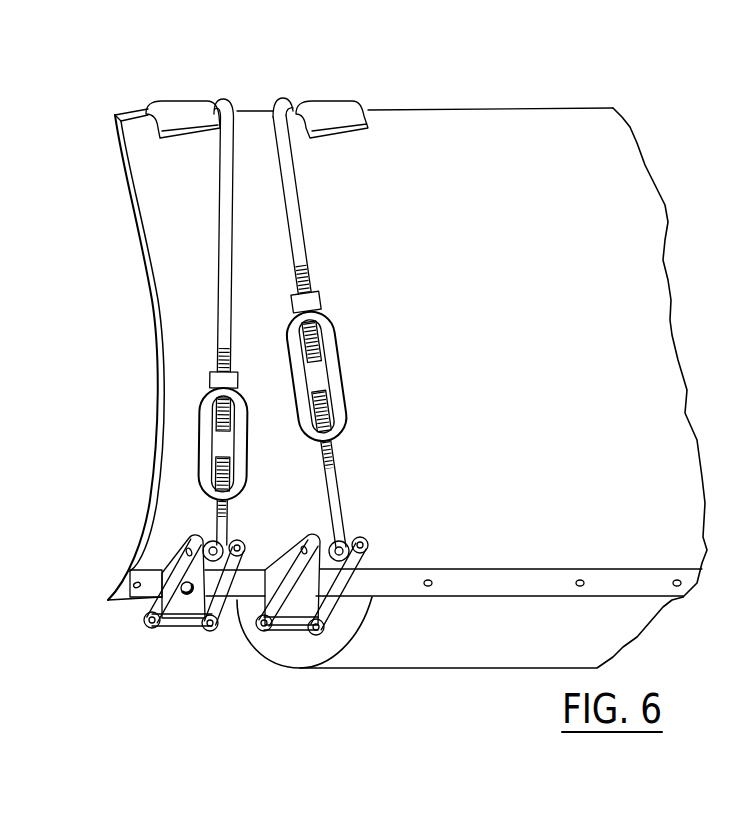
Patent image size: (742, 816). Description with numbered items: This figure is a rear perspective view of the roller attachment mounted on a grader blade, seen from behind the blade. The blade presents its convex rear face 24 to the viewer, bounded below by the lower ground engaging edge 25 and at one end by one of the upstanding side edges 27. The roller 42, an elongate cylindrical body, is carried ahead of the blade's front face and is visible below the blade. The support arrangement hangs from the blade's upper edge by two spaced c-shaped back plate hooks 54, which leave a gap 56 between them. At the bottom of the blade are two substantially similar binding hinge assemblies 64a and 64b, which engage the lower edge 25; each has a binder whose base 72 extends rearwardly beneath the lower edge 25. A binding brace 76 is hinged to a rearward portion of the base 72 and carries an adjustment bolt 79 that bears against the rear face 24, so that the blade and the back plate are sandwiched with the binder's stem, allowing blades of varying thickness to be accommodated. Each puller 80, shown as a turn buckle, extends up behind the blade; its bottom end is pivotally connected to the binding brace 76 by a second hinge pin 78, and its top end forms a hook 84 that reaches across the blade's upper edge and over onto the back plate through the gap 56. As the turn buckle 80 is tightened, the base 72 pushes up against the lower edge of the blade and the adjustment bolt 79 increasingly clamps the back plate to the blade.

The rear face 24 is at (511, 348).
The lower ground engaging edge 25 is at (520, 578).
The side edges 27 is at (137, 252).
The roller 42 is at (447, 680).
The back plate hooks 54 is at (177, 106).
The gap 56 is at (372, 69).
The binding hinge assembly 64a is at (154, 637).
The binding hinge assembly 64b is at (292, 680).
The base 72 is at (140, 608).
The binding brace 76 is at (170, 571).
The second hinge pin 78 is at (207, 543).
The adjustment bolt 79 is at (188, 597).
The puller 80 is at (202, 402).
The hook 84 is at (275, 105).